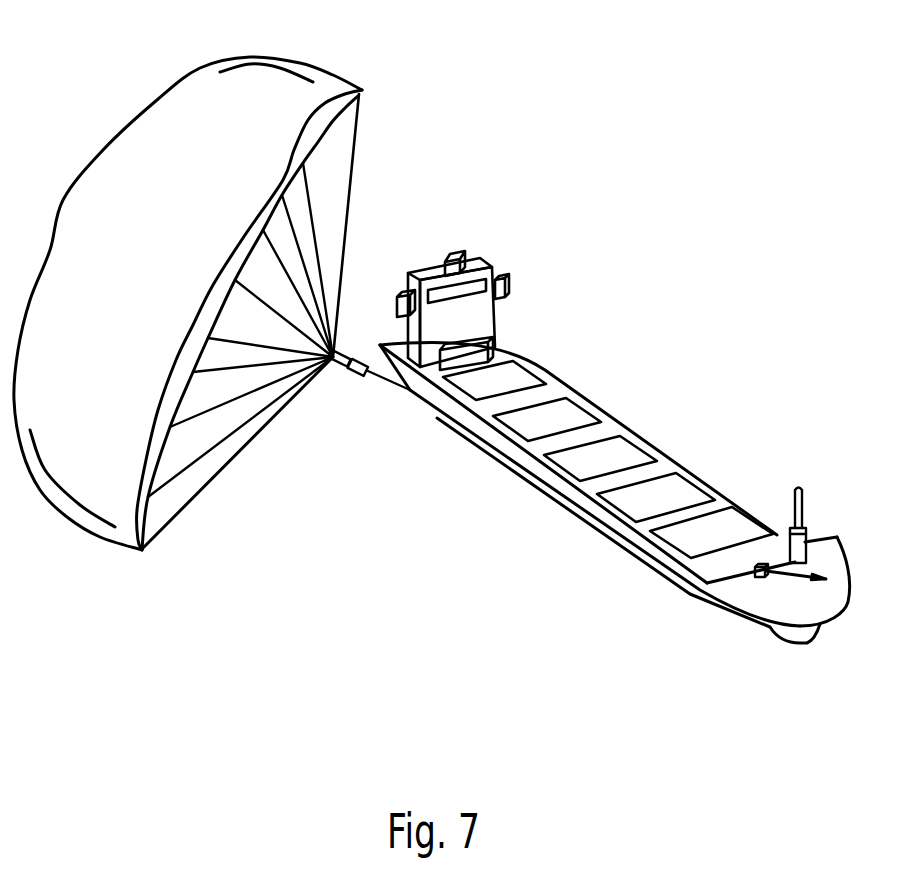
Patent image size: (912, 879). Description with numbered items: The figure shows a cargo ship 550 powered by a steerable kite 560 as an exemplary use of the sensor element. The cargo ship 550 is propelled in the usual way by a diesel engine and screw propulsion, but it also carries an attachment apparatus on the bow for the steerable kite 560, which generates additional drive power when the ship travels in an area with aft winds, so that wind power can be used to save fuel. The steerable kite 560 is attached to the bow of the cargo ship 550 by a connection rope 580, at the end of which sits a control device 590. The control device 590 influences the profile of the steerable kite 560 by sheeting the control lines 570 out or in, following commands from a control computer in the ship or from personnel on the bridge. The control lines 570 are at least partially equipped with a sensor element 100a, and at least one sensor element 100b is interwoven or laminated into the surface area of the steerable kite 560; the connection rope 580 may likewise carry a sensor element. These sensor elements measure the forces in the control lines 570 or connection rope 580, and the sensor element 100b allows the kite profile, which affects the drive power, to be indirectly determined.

The sensor element 100a is at (351, 153).
The sensor element 100b is at (315, 107).
The cargo ship 550 is at (632, 332).
The steerable kite 560 is at (83, 472).
The control lines 570 is at (203, 490).
The connection rope 580 is at (383, 380).
The control device 590 is at (352, 345).